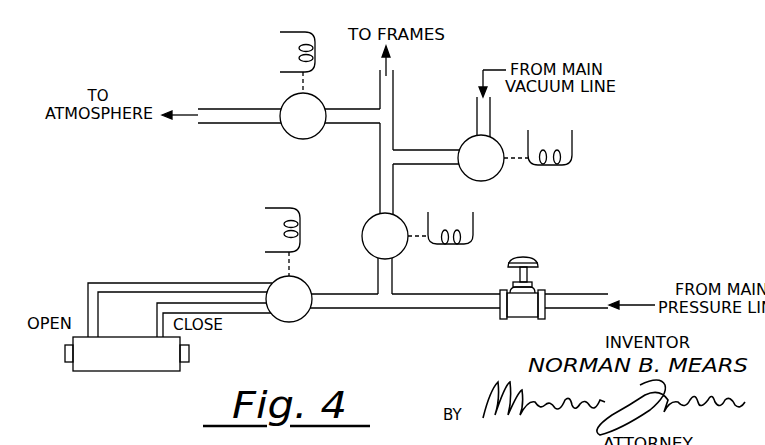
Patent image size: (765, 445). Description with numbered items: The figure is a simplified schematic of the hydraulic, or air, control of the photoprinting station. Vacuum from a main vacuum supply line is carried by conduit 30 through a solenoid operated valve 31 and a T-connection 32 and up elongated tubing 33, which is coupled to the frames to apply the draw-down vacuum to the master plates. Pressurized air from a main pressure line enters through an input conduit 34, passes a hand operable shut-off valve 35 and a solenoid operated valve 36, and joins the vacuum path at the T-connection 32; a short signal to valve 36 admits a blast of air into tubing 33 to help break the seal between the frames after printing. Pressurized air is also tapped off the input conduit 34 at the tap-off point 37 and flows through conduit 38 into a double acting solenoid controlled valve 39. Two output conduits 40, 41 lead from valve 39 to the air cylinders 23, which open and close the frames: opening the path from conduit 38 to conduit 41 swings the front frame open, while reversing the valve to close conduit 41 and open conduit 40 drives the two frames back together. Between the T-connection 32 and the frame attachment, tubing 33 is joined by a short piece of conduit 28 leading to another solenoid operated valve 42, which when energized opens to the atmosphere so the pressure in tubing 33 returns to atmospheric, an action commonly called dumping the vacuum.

The air cylinder 23 is at (118, 372).
The short piece of conduit 28 is at (358, 124).
The conduit 30 is at (491, 113).
The solenoid operated valve 31 is at (492, 178).
The T-connection 32 is at (394, 150).
The elongated tubing 33 is at (394, 86).
The input conduit 34 is at (575, 293).
The hand operable shut-off valve 35 is at (530, 258).
The solenoid operated valve 36 is at (369, 220).
The tap-off point 37 is at (371, 287).
The conduit 38 is at (347, 309).
The double acting solenoid controlled valve 39 is at (278, 280).
The conduit 40 is at (256, 314).
The conduit 41 is at (157, 282).
The solenoid operated valve 42 is at (287, 100).